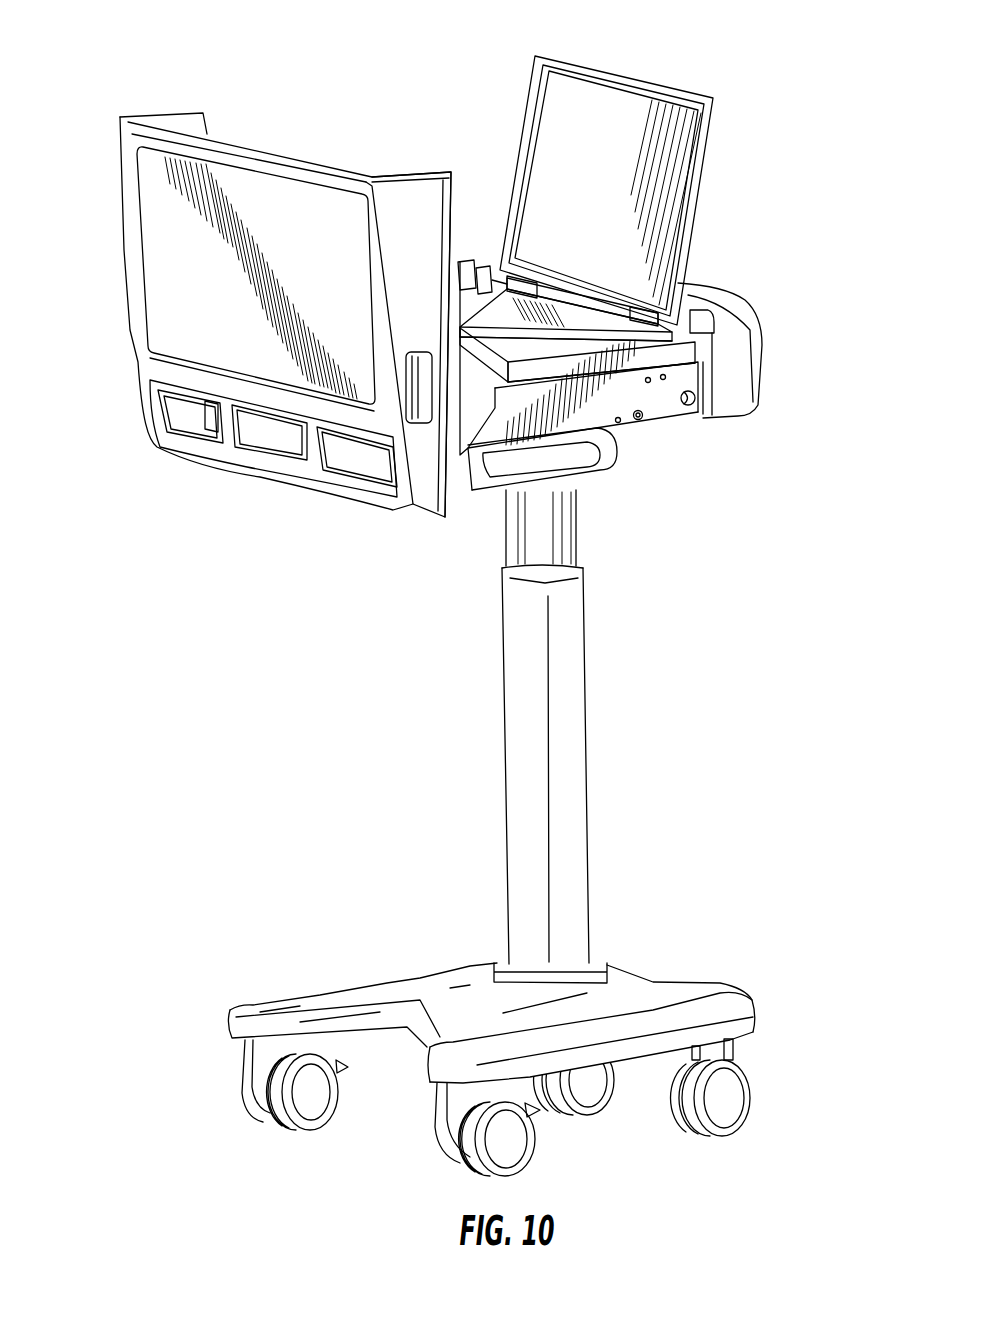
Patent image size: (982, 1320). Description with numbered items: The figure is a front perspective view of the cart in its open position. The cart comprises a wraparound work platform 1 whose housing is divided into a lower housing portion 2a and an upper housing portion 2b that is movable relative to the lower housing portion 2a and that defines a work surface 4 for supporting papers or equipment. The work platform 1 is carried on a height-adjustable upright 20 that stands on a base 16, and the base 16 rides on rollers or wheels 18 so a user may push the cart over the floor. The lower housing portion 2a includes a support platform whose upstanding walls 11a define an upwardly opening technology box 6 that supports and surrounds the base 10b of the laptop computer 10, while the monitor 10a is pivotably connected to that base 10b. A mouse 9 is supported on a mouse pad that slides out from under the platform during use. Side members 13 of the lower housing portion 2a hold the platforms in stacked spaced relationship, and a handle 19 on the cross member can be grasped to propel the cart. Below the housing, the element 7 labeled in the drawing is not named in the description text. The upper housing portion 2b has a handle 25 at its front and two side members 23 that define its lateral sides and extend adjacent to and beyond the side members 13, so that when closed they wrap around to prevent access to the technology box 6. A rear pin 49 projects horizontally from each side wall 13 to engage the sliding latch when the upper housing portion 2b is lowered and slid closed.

The wraparound work platform 1 is at (310, 106).
The lower housing portion 2a is at (684, 437).
The upper housing portion 2b is at (435, 168).
The work surface 4 is at (187, 281).
The technology box 6 is at (706, 350).
The column mount 7 is at (487, 492).
The mouse 9 is at (545, 467).
The laptop computer 10 is at (727, 88).
The monitor 10a is at (675, 208).
The base 10b is at (517, 317).
The upstanding walls 11a is at (628, 355).
The side members 13 is at (588, 418).
The base 16 is at (753, 1000).
The rollers or wheels 18 is at (333, 1117).
The handle 19 is at (708, 288).
The upright 20 is at (583, 714).
The side members 23 is at (197, 127).
The handle 25 is at (213, 458).
The rear pin 49 is at (639, 421).